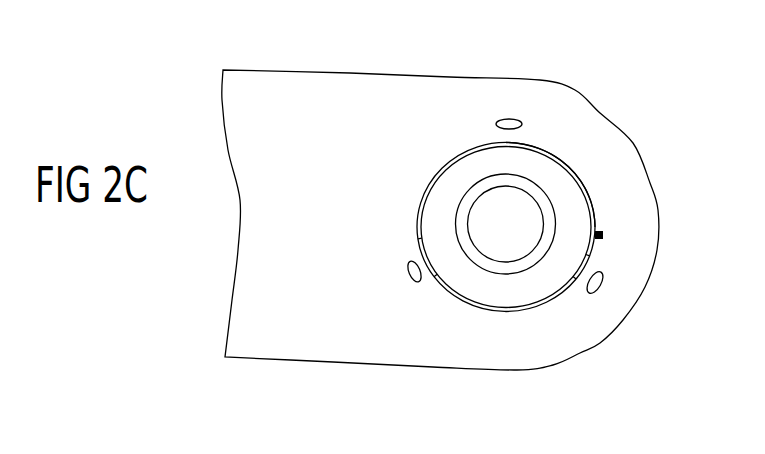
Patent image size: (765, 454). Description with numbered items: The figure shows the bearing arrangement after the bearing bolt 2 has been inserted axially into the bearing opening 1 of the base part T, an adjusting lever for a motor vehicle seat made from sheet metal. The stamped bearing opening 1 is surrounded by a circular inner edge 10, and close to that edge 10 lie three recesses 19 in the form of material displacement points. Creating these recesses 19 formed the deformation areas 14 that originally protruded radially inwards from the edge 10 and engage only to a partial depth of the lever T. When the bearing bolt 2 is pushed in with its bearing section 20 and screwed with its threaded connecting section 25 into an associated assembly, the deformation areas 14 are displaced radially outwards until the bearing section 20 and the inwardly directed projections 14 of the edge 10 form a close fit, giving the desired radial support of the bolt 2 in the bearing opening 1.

The bearing opening 1 is at (451, 146).
The bearing element 2 is at (600, 235).
The inner edge 10 is at (443, 183).
The deformation areas 14 is at (524, 143).
The recesses 19 is at (510, 119).
The bearing section 20 is at (582, 180).
The connecting section 25 is at (558, 220).
The base part T is at (598, 112).